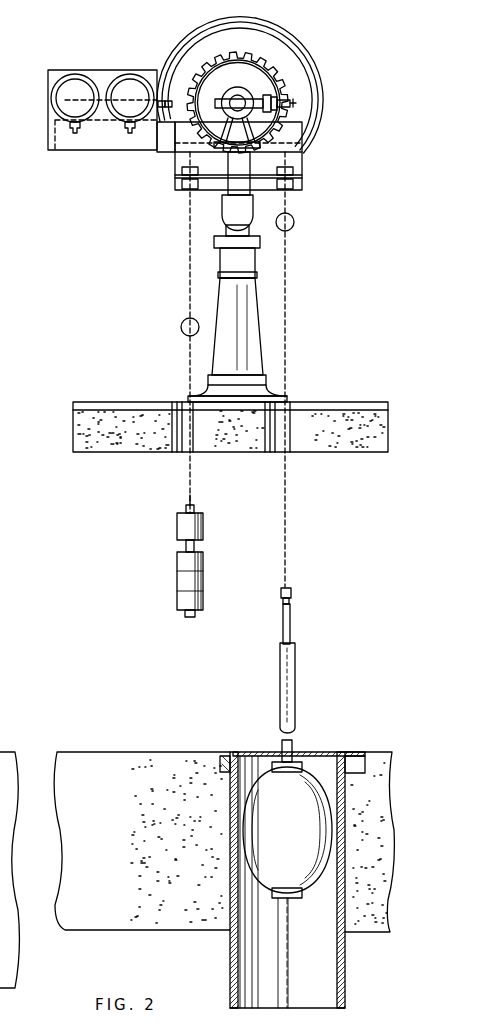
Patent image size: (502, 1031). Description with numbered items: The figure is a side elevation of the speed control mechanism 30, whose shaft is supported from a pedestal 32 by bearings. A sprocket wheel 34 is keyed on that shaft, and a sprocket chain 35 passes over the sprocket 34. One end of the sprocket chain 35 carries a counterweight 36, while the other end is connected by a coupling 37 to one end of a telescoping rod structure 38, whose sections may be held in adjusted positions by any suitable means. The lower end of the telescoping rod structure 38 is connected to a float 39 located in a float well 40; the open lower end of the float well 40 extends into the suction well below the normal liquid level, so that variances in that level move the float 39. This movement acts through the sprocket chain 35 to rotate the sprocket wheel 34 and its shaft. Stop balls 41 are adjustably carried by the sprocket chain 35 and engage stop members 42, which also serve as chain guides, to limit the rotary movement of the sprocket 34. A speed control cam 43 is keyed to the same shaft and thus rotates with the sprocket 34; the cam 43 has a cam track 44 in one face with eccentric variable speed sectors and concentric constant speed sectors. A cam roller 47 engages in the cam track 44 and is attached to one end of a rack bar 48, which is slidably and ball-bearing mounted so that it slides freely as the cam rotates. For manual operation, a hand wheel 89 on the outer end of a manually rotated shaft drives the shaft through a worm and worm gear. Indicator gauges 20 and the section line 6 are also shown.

The gauges 20 is at (120, 88).
The cam roller 47 is at (163, 100).
The rack bar 48 is at (160, 100).
The speed control cam 43 is at (302, 36).
The sprocket wheel 34 is at (283, 73).
The cam track 44 is at (312, 88).
The section line 6- 6 is at (203, 100).
The hand wheel 89 is at (297, 113).
The control mechanism 30 is at (305, 178).
The stop members 42 is at (294, 186).
The sprocket chain 35 is at (188, 268).
The stop balls 41 is at (293, 229).
The pedestal 32 is at (262, 356).
The counterweight 36 is at (180, 575).
The coupling 37 is at (292, 596).
The telescoping rod structure 38 is at (296, 683).
The float 39 is at (305, 800).
The float well 40 is at (334, 908).